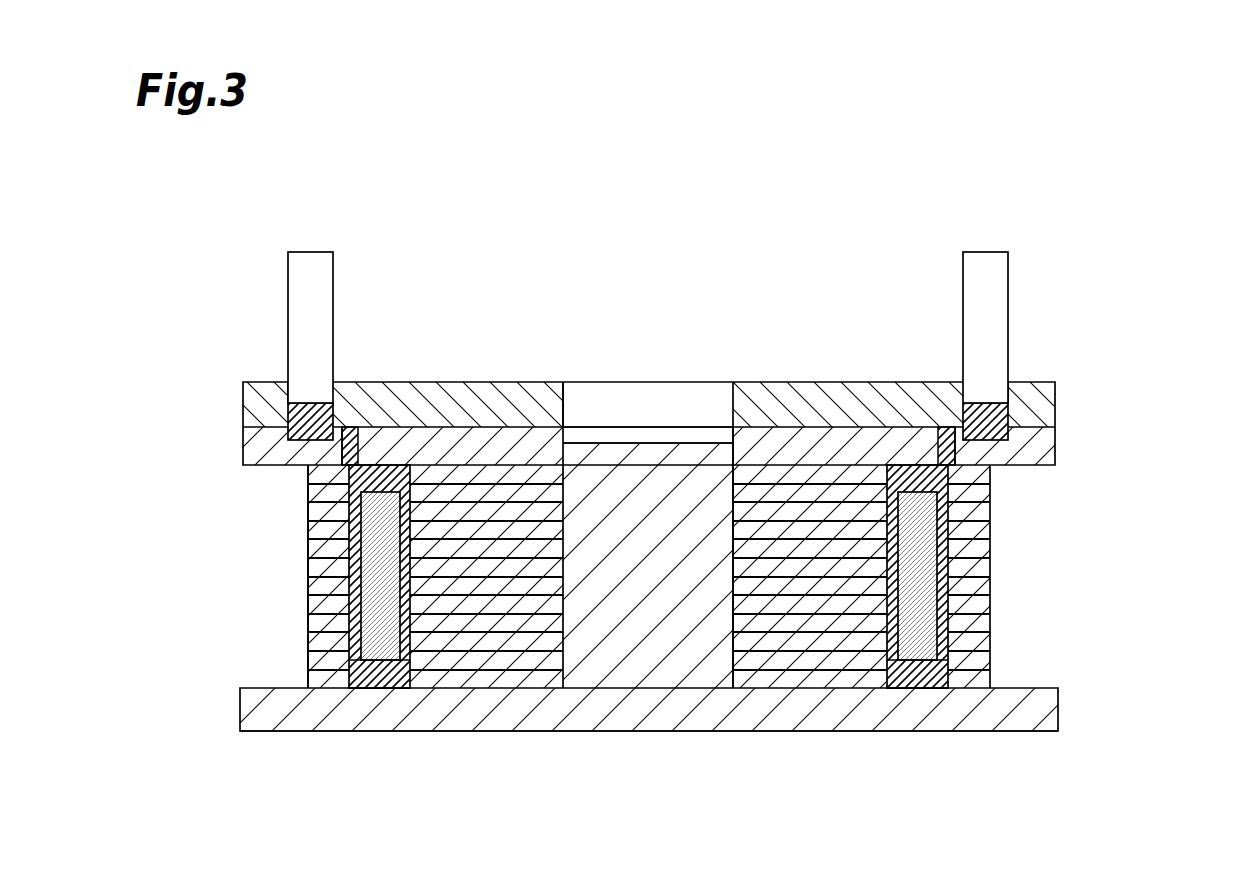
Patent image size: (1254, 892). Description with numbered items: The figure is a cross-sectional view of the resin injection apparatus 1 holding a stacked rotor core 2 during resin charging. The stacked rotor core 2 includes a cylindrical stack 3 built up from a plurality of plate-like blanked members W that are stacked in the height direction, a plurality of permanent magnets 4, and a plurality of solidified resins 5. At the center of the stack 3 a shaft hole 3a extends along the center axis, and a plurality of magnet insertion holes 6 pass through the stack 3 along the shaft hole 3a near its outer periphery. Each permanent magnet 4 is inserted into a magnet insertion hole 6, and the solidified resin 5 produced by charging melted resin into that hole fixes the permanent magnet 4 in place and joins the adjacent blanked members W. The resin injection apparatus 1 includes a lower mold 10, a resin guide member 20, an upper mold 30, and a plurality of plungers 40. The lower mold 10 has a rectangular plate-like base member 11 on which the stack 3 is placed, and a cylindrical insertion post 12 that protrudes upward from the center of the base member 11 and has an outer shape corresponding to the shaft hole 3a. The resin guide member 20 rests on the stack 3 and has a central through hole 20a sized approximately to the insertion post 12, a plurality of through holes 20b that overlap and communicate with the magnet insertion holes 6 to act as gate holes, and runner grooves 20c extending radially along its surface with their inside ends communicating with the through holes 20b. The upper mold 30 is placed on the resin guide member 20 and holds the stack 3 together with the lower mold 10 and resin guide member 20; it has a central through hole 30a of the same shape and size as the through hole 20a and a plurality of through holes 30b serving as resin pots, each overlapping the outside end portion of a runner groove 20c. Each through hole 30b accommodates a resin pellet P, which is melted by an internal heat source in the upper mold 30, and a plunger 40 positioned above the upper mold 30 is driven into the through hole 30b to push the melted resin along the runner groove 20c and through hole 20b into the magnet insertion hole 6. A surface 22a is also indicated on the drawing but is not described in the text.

The resin injection apparatus 1 is at (688, 465).
The stacked rotor core 2 is at (711, 636).
The stack 3 is at (667, 636).
The shaft hole 3a is at (731, 660).
The permanent magnet 4 is at (375, 585).
The solidified resin 5 is at (368, 688).
The magnet insertion hole 6 is at (648, 628).
The lower mold 10 is at (716, 553).
The base member 11 is at (1016, 723).
The insertion post 12 is at (652, 463).
The resin guide member 20 is at (676, 418).
The through hole 20a is at (733, 455).
The through hole 20b is at (362, 452).
The runner groove 20c is at (341, 440).
The recess surface 22a is at (568, 437).
The upper mold 30 is at (645, 364).
The through hole 30a is at (566, 402).
The through hole 30b is at (292, 398).
The plunger 40 is at (330, 236).
The resin pellet P is at (312, 403).
The blanked member W is at (306, 681).